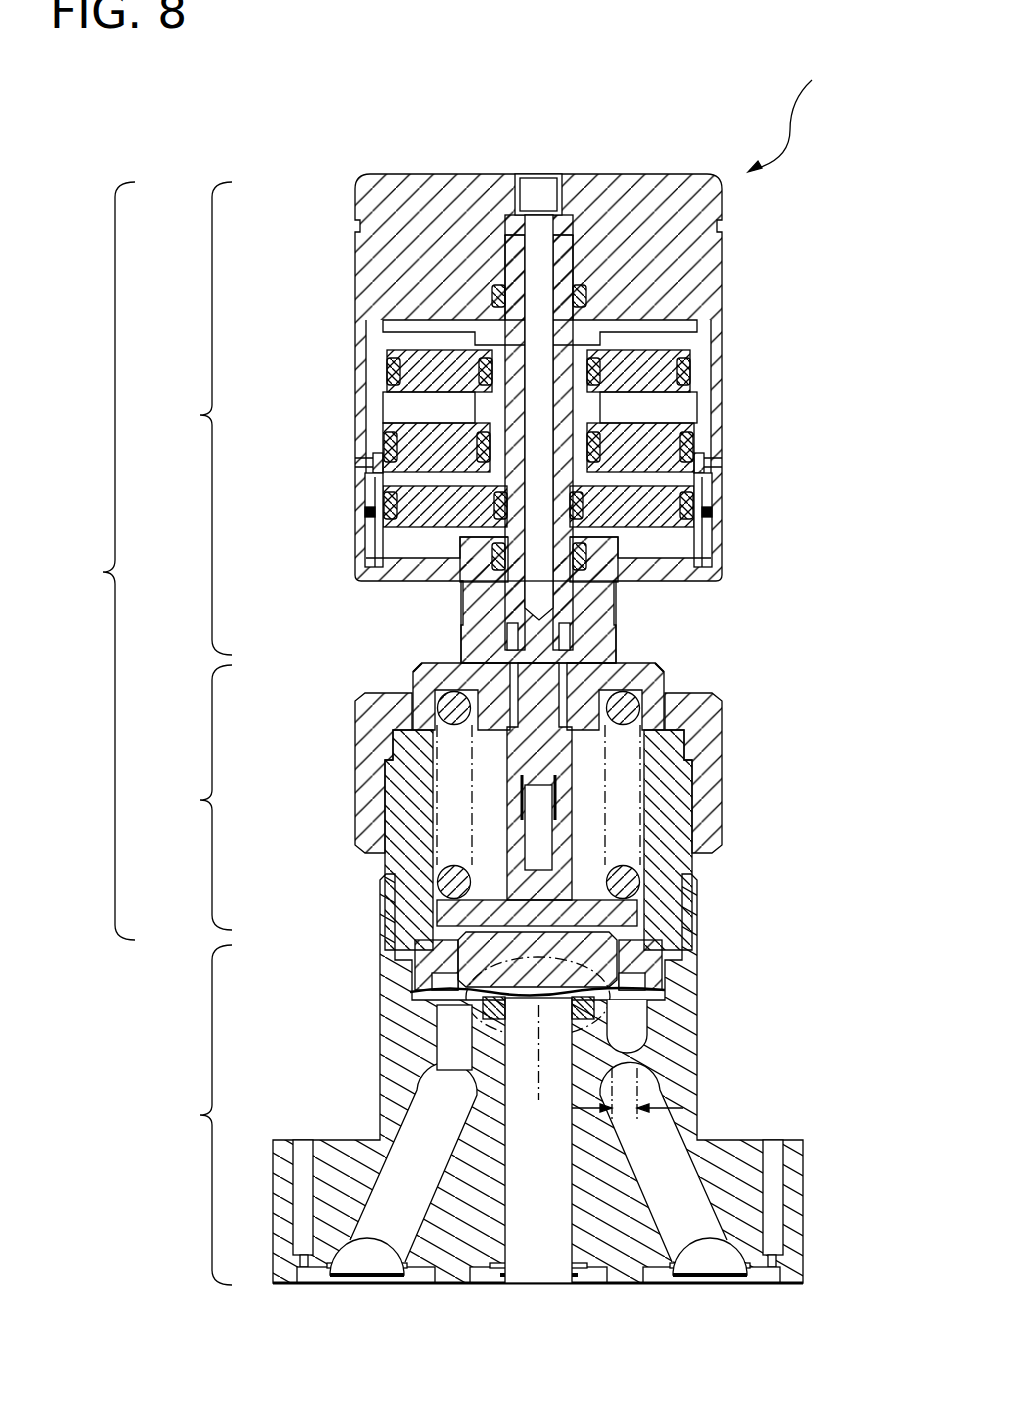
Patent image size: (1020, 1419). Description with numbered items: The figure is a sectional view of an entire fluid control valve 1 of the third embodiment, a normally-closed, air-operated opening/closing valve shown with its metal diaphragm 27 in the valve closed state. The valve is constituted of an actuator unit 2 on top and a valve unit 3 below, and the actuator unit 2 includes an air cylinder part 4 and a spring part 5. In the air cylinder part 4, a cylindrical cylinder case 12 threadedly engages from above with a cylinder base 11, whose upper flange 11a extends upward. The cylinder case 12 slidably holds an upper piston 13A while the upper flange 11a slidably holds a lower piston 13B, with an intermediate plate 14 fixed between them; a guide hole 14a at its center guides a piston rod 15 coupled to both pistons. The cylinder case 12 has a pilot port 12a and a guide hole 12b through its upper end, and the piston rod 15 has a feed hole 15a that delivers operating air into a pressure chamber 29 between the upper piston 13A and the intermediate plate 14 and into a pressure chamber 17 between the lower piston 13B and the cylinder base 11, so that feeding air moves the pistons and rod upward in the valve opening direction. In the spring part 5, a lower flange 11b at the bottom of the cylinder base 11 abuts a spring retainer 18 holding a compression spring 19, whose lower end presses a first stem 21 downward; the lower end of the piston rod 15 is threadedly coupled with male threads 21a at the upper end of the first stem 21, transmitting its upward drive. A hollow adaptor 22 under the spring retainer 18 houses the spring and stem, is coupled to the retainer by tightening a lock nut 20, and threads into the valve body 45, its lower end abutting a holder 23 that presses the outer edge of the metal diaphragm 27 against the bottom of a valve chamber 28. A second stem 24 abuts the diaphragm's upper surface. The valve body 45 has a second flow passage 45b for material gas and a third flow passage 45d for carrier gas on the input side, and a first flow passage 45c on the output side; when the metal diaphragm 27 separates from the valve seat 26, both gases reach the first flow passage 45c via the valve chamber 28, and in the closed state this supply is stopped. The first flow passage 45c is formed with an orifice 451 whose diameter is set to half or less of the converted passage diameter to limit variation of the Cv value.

The fluid control valve 1 is at (787, 113).
The actuator unit 2 is at (109, 561).
The valve unit 3 is at (203, 1115).
The air cylinder part 4 is at (203, 418).
The spring part 5 is at (203, 797).
The cylinder base 11 is at (668, 583).
The upper flange 11a is at (377, 508).
The lower flange 11b is at (612, 635).
The cylinder case 12 is at (648, 210).
The pilot port 12a is at (525, 190).
The guide hole 12b is at (558, 232).
The upper piston 13A is at (655, 352).
The lower piston 13B is at (640, 495).
The intermediate plate 14 is at (650, 440).
The guide hole 14a is at (497, 422).
The piston rod 15 is at (575, 338).
The feed hole 15a is at (530, 255).
The pressure chamber 17 is at (665, 540).
The spring retainer 18 is at (633, 683).
The compression spring 19 is at (655, 672).
The lock nut 20 is at (692, 730).
The first stem 21 is at (553, 885).
The male threads 21a is at (548, 765).
The adaptor 22 is at (663, 900).
The holder 23 is at (645, 958).
The second stem 24 is at (602, 972).
The valve seat 26 is at (705, 1052).
The metal diaphragm 27 is at (450, 1006).
The valve chamber 28 is at (440, 1025).
The pressure chamber 29 is at (655, 408).
The valve body 45 is at (627, 1237).
The second flow passage 45b is at (510, 1240).
The first flow passage 45c is at (702, 1217).
The third flow passage 45d is at (370, 1210).
The orifice 451 is at (632, 1090).